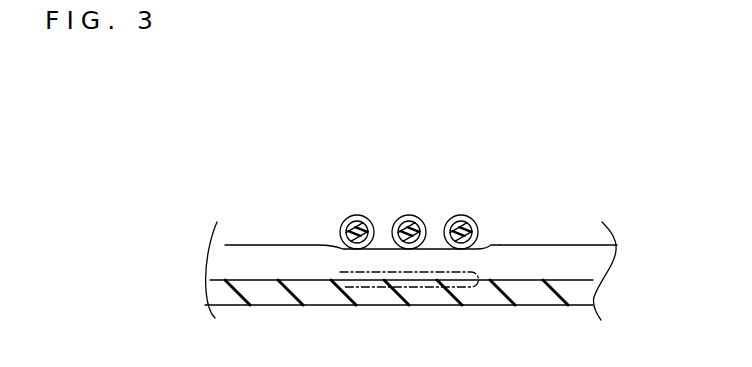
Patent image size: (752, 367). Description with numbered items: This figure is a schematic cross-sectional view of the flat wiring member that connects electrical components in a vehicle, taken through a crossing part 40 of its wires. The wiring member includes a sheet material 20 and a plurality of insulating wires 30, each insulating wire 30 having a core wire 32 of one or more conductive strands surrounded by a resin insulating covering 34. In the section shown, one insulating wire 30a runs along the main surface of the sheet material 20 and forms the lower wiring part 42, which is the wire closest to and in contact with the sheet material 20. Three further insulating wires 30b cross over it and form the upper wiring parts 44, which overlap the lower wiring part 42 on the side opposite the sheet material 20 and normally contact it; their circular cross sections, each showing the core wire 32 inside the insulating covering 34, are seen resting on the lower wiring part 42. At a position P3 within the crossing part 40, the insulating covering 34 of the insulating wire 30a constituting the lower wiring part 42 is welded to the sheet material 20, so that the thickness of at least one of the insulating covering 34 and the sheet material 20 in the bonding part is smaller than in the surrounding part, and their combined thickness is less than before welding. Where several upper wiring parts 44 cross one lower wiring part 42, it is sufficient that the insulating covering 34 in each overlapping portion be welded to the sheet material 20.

The sheet material 20 is at (512, 308).
The insulating wire 30 is at (411, 223).
The insulating wire 30a is at (553, 258).
The insulating wire 30b is at (372, 168).
The core wire 32 is at (337, 227).
The insulating covering 34 is at (345, 216).
The crossing part 40 is at (523, 153).
The lower wiring part 42 is at (460, 262).
The upper wiring part 44 is at (461, 215).
The position P3 is at (402, 308).